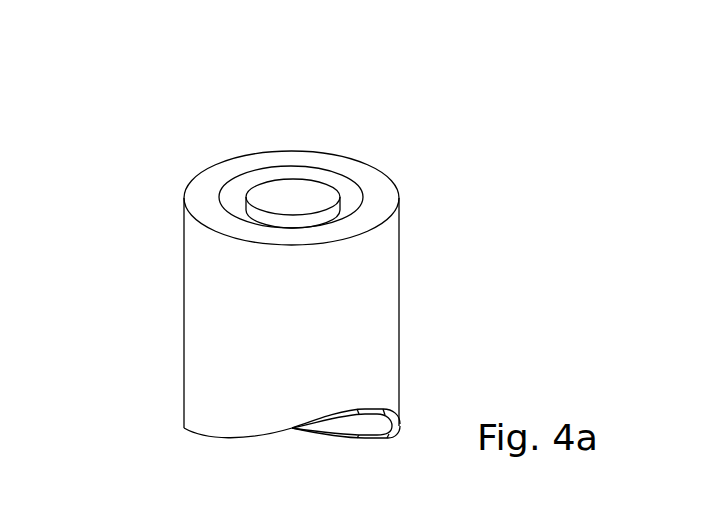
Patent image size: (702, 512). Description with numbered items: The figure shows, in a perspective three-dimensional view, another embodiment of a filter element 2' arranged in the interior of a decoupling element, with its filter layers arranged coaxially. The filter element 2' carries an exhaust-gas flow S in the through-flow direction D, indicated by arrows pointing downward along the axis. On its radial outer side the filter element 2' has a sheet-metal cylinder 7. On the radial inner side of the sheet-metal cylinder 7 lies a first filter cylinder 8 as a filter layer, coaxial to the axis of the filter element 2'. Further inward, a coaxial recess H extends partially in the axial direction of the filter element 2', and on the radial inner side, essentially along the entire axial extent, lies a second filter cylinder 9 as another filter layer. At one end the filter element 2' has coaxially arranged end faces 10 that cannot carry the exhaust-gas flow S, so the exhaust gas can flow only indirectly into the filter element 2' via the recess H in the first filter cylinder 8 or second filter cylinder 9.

The filter element 2' is at (251, 299).
The sheet-metal cylinder 7 is at (183, 375).
The first filter cylinder 8 is at (208, 197).
The second filter cylinder 9 is at (262, 195).
The end faces 10 is at (308, 193).
The exhaust-gas flow S is at (288, 77).
The coaxial recess H is at (348, 205).
The through-flow direction D is at (297, 385).